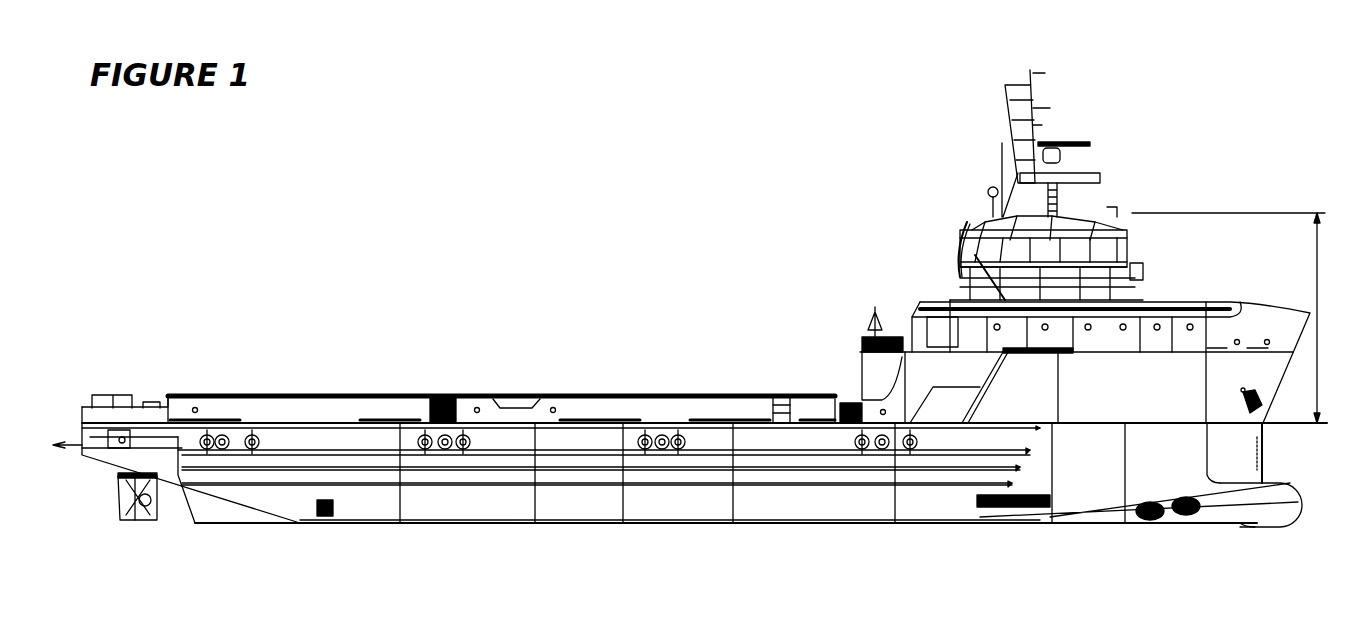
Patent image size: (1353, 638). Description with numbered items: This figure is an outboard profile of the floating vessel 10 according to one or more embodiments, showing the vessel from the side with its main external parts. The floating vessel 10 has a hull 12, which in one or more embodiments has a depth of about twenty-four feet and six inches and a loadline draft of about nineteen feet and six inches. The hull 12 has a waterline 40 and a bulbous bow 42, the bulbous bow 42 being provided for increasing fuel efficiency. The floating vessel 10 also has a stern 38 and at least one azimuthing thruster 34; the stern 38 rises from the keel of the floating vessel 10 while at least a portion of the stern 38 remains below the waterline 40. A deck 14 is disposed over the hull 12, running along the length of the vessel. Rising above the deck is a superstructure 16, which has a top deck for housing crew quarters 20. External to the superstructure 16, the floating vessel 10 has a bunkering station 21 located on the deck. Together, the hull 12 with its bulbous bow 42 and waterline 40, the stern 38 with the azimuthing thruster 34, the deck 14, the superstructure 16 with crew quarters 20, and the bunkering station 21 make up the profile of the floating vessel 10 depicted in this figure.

The floating vessel 10 is at (1258, 109).
The hull 12 is at (684, 525).
The deck 14 is at (275, 423).
The superstructure 16 is at (1233, 318).
The crew quarters 20 is at (1208, 328).
The bunkering station 21 is at (778, 397).
The azimuthing thruster 34 is at (154, 506).
The stern 38 is at (72, 424).
The waterline 40 is at (1267, 445).
The bulbous bow 42 is at (1292, 505).